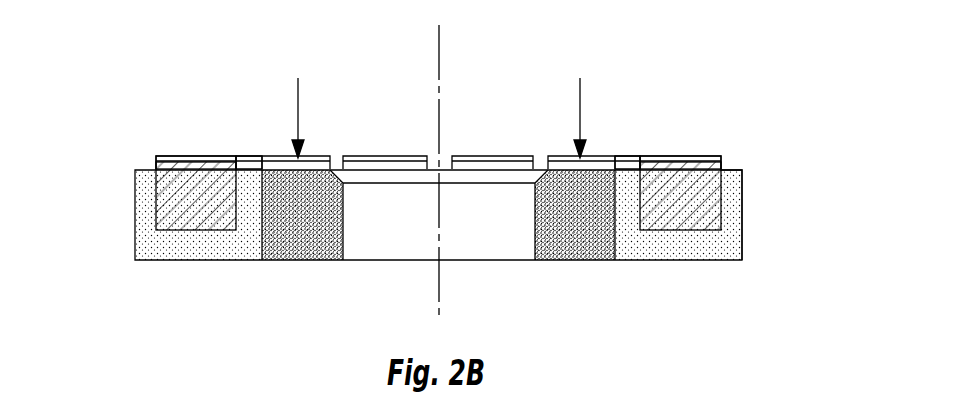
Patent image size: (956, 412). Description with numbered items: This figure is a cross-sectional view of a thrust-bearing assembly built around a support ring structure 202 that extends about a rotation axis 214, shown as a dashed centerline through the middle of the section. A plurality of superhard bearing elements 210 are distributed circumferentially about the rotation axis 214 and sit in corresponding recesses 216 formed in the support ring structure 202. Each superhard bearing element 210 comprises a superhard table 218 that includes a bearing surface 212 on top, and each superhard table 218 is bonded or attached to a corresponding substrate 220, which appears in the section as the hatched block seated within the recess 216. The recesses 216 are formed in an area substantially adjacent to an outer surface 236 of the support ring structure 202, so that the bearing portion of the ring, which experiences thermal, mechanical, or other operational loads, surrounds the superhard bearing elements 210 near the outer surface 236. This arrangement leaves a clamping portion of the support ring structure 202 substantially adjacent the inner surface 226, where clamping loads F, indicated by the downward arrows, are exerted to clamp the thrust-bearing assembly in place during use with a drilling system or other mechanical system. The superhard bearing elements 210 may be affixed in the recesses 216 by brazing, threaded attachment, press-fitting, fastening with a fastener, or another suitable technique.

The support ring structure 202 is at (439, 167).
The superhard bearing elements 210 is at (220, 156).
The bearing surface 212 is at (175, 155).
The rotation axis 214 is at (439, 35).
The recesses 216 is at (193, 232).
The superhard table 218 is at (157, 158).
The substrate 220 is at (175, 193).
The inner surface 226 is at (345, 225).
The outer surface 236 is at (742, 233).